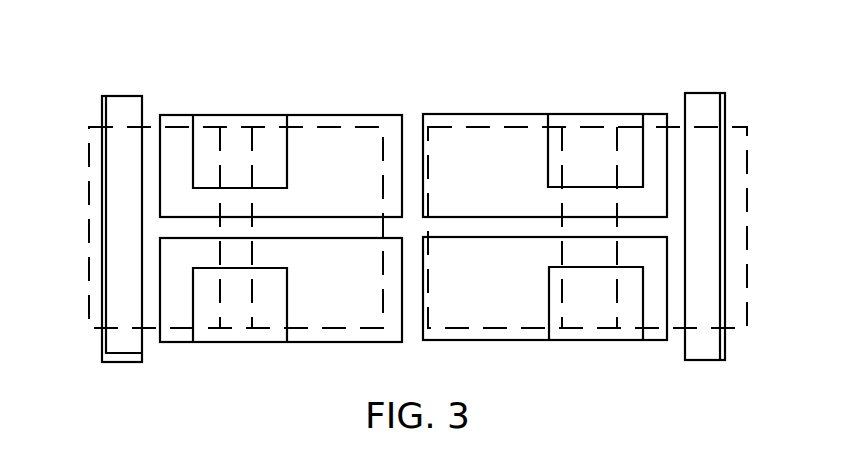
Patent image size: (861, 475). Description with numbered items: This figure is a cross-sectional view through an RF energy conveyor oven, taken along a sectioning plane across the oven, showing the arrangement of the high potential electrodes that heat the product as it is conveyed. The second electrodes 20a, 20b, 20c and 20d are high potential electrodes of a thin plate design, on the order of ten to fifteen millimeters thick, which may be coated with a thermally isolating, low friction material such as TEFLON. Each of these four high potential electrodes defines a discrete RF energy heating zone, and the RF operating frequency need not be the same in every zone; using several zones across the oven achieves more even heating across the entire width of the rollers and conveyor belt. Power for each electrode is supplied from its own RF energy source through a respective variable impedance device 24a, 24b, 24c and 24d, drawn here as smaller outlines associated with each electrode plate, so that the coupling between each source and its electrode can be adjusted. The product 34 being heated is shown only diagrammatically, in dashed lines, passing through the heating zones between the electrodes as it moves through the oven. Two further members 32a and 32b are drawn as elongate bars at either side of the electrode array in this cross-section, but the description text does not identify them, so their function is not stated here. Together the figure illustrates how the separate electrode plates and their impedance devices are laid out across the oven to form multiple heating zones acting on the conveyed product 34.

The second electrode 20a is at (344, 332).
The second electrode 20b is at (480, 338).
The second electrode 20c is at (350, 123).
The second electrode 20d is at (448, 120).
The variable impedance device 24a is at (235, 315).
The variable impedance device 24b is at (592, 322).
The variable impedance device 24c is at (243, 127).
The variable impedance device 24d is at (577, 130).
The first terminal bar 32a is at (125, 110).
The second terminal bar 32b is at (702, 108).
The product 34 is at (473, 228).